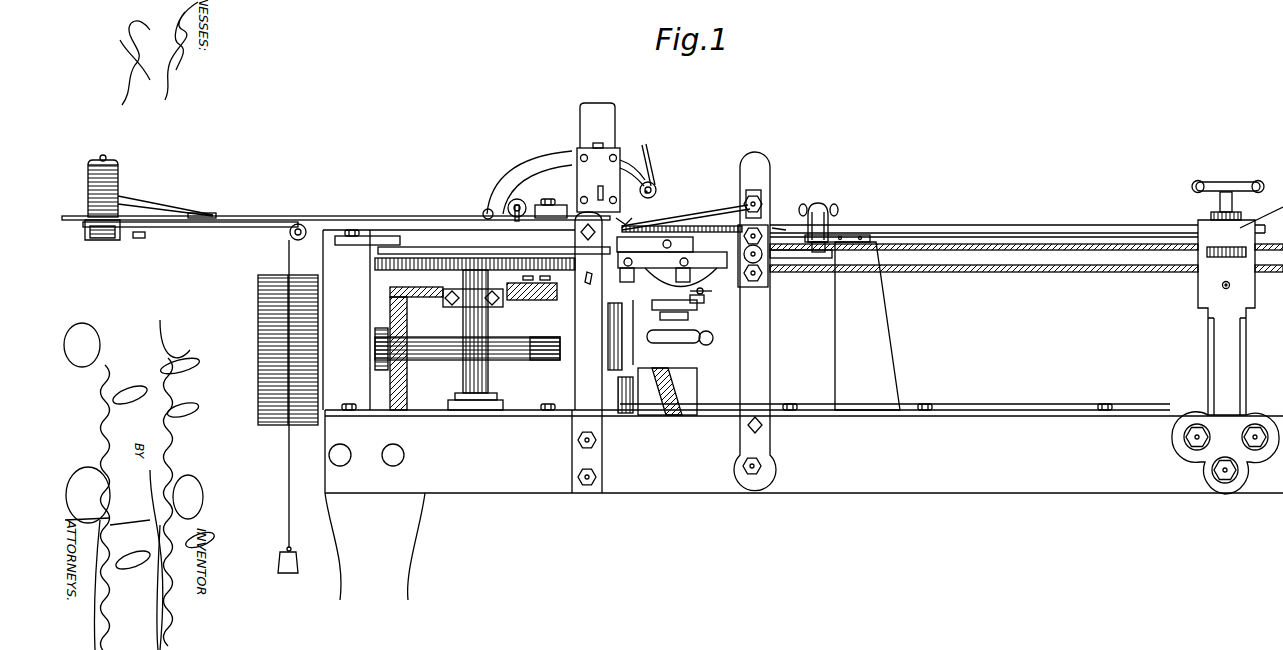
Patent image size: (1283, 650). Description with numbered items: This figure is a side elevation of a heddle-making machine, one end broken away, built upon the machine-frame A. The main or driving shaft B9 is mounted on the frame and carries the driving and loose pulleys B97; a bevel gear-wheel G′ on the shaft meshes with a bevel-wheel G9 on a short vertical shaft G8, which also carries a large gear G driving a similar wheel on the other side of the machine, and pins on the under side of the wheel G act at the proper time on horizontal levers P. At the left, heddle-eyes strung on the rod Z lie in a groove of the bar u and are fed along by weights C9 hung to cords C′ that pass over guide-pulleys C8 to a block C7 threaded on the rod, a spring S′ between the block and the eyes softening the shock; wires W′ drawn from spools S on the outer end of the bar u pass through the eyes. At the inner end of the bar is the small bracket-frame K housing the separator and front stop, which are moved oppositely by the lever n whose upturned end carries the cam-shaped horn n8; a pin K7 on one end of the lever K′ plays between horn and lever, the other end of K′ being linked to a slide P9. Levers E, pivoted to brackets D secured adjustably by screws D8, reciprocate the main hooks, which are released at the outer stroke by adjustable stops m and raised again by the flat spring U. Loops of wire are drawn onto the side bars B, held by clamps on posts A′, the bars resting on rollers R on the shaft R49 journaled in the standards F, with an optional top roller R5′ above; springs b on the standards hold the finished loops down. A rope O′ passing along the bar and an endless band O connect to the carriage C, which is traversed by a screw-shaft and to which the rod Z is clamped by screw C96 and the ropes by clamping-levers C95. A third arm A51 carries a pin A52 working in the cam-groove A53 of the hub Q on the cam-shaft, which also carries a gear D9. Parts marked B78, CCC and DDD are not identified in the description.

The spool S is at (118, 183).
The wire W′ is at (175, 206).
The block C7 is at (212, 213).
The spring S′ is at (239, 216).
The rod Z is at (80, 224).
The bar u is at (203, 228).
The guide-pulley C8 is at (534, 189).
The screw D8 is at (350, 228).
The bracket D is at (380, 236).
The cord C′ is at (290, 520).
The weight C9 is at (299, 565).
The driving and loose pulleys B97 is at (258, 310).
The lever E is at (494, 242).
The gear G is at (475, 271).
The bevel gear-wheel G′ is at (408, 333).
The main or driving shaft B9 is at (430, 362).
The short vertical shaft G8 is at (475, 340).
The bevel-wheel G9 is at (522, 302).
The horizontal lever P is at (522, 278).
The slide P9 is at (558, 337).
The bracket-frame K is at (616, 120).
The lever K′ is at (516, 168).
The adjustable stop m is at (588, 311).
The flat spring U is at (605, 191).
The horn n8 is at (654, 165).
The pin K7 is at (656, 192).
The lever n is at (636, 197).
The spring b is at (686, 218).
The rack B78 is at (679, 219).
The standard F is at (755, 321).
The top roller R5′ is at (768, 202).
The shaft R49 is at (762, 258).
The roller R is at (772, 256).
The rope O′ is at (785, 226).
The screw C96 is at (837, 208).
The clamping-lever C95 is at (820, 253).
The carriage C is at (867, 326).
The side bar B is at (958, 225).
The endless band O is at (1046, 251).
The pin CCC is at (710, 291).
The pin A52 is at (655, 310).
The block DDD is at (674, 321).
The third arm A51 is at (713, 338).
The gear D9 is at (625, 414).
The hub Q is at (667, 391).
The cam-groove A53 is at (668, 415).
The post A′ is at (1238, 490).
The machine-frame A is at (804, 502).